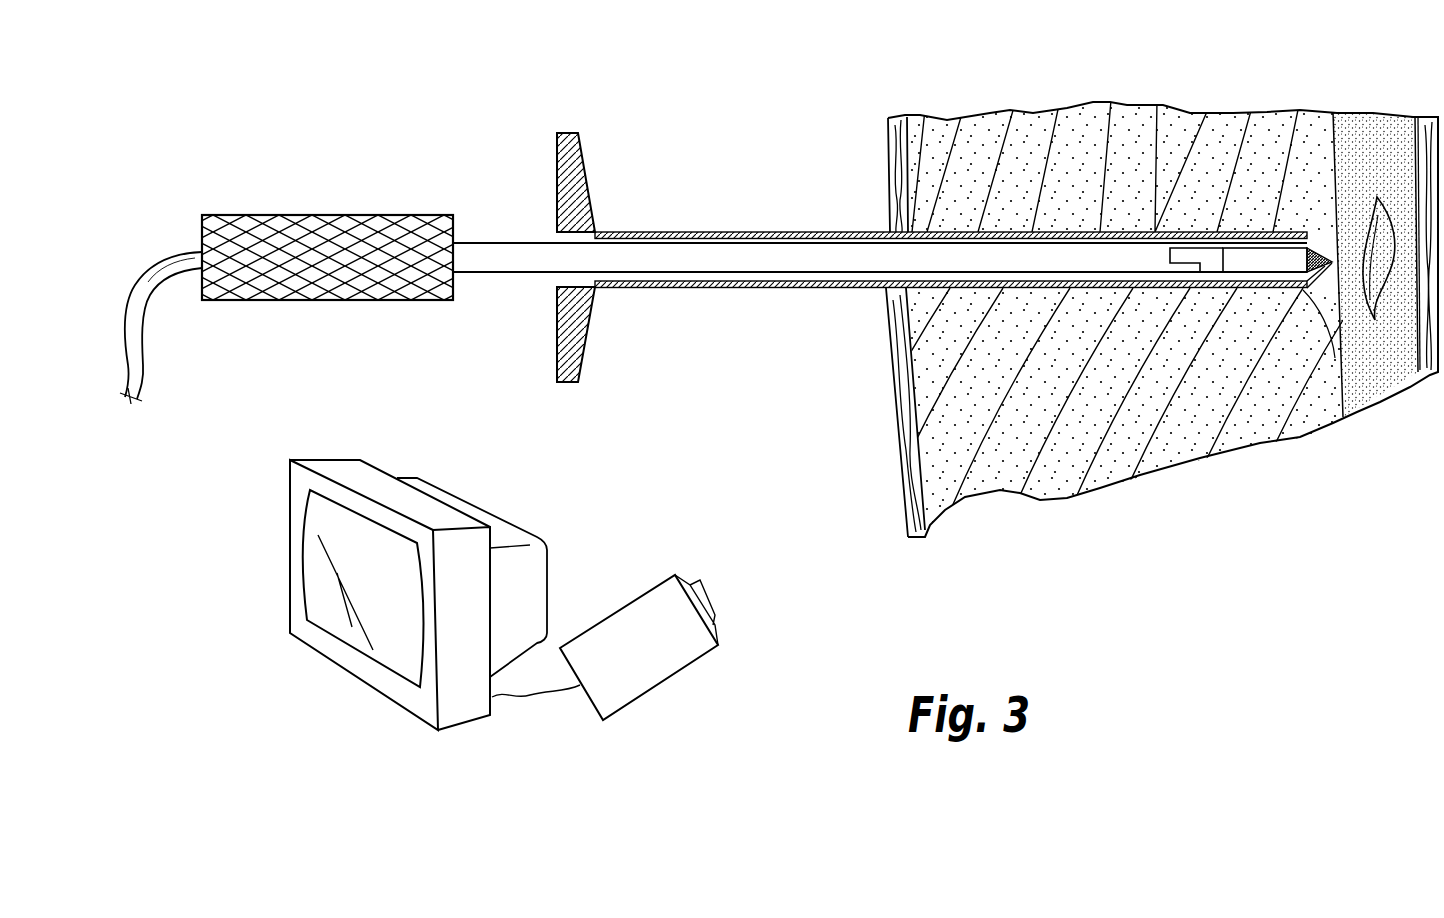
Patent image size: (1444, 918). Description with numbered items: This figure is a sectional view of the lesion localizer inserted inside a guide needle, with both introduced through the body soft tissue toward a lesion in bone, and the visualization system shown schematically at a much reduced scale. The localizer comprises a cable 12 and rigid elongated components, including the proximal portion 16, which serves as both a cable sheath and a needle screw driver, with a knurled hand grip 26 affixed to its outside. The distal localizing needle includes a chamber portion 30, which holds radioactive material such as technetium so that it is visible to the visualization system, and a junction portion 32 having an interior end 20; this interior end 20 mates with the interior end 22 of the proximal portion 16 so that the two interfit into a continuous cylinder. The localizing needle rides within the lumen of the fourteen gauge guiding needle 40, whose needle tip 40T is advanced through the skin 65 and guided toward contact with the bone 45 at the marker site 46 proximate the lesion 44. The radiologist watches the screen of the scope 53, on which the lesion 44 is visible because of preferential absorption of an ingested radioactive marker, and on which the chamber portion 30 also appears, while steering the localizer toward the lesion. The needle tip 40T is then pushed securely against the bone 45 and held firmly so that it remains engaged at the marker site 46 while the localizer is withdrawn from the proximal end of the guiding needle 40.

The cable 12 is at (152, 358).
The hand grip 26 is at (293, 287).
The proximal portion 16 is at (490, 262).
The guiding needle 40 is at (762, 232).
The needle tip 40T is at (1312, 236).
The interior end 20 is at (1182, 233).
The junction portion 32 is at (1213, 253).
The chamber portion 30 is at (1287, 260).
The interior end 22 is at (1145, 258).
The skin 65 is at (885, 413).
The bone 45 is at (1383, 135).
The lesion 44 is at (1390, 398).
The marker site 46 is at (1335, 358).
The scope 53 is at (360, 683).